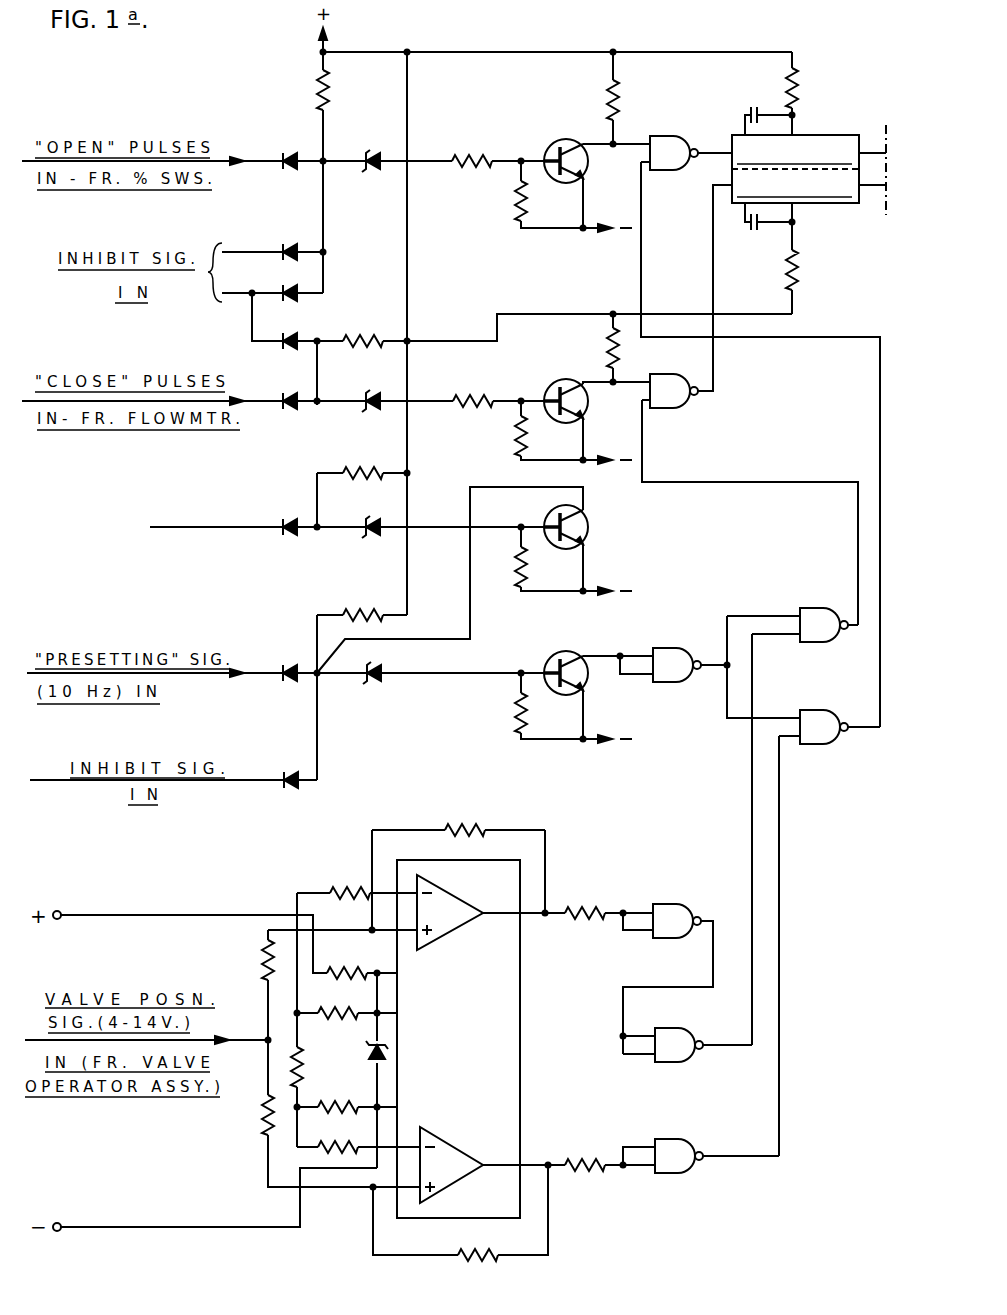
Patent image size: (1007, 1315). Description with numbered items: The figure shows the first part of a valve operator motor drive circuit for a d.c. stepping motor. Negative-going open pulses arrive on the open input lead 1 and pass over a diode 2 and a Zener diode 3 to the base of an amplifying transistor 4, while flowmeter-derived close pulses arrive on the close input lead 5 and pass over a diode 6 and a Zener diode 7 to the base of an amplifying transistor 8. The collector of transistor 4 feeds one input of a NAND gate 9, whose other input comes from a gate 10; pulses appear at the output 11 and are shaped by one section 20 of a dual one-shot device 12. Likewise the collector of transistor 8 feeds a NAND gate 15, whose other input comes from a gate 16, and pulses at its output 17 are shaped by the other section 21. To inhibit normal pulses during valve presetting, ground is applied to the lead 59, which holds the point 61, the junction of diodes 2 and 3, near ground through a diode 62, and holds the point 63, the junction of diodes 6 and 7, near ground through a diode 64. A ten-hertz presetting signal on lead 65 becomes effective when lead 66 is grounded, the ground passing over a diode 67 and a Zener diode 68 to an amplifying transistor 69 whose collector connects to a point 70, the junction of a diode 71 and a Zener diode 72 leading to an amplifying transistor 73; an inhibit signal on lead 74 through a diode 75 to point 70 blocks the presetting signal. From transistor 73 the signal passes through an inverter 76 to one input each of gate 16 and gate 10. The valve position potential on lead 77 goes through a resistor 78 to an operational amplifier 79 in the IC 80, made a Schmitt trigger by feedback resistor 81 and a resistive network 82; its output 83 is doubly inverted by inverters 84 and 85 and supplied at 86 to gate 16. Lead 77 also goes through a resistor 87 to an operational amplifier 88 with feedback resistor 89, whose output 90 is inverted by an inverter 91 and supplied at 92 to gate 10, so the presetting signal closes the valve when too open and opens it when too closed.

The open input lead 1 is at (252, 158).
The diode 2 is at (288, 152).
The Zener diode 3 is at (373, 155).
The amplifying transistor 4 is at (556, 140).
The close input lead 5 is at (262, 407).
The diode 6 is at (285, 392).
The Zener diode 7 is at (376, 393).
The amplifying transistor 8 is at (556, 381).
The NAND gate 9 is at (652, 134).
The NAND gate 10 is at (813, 709).
The output of gate 9 11 is at (706, 148).
The dual one-shot device 12 is at (819, 126).
The NAND gate 15 is at (677, 409).
The NAND gate 16 is at (814, 607).
The output of gate 15 17 is at (714, 357).
The one-shot section 20 is at (857, 136).
The one-shot section 21 is at (830, 205).
The lead 59 is at (235, 298).
The point 61 is at (318, 170).
The diode 62 is at (280, 290).
The point 63 is at (312, 408).
The diode 64 is at (298, 335).
The lead 65 is at (258, 652).
The lead 66 is at (188, 527).
The diode 67 is at (282, 535).
The Zener diode 68 is at (365, 521).
The amplifying transistor 69 is at (590, 533).
The point 70 is at (320, 678).
The diode 71 is at (289, 680).
The Zener diode 72 is at (383, 683).
The amplifying transistor 73 is at (568, 650).
The lead 74 is at (258, 784).
The diode 75 is at (298, 786).
The inverter 76 is at (666, 648).
The lead 77 is at (250, 1040).
The resistor 78 is at (262, 962).
The operational amplifier 79 is at (452, 938).
The IC 80 is at (522, 1018).
The resistor 81 is at (465, 823).
The resistive network 82 is at (347, 1040).
The output of amplifier 79 83 is at (548, 918).
The inverter 84 is at (666, 904).
The inverter 85 is at (675, 1028).
The connection 86 is at (752, 851).
The resistor 87 is at (268, 1118).
The operational amplifier 88 is at (460, 1145).
The resistor 89 is at (462, 1260).
The output of amplifier 88 90 is at (530, 1163).
The inverter 91 is at (673, 1139).
The connection 92 is at (780, 957).